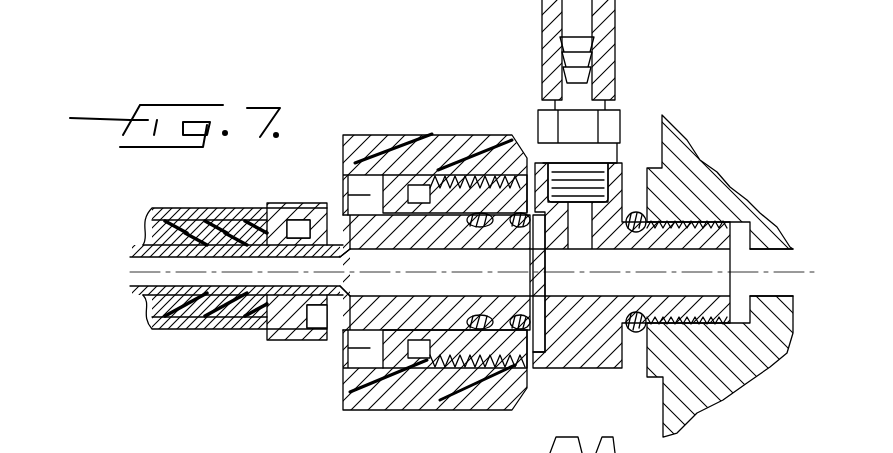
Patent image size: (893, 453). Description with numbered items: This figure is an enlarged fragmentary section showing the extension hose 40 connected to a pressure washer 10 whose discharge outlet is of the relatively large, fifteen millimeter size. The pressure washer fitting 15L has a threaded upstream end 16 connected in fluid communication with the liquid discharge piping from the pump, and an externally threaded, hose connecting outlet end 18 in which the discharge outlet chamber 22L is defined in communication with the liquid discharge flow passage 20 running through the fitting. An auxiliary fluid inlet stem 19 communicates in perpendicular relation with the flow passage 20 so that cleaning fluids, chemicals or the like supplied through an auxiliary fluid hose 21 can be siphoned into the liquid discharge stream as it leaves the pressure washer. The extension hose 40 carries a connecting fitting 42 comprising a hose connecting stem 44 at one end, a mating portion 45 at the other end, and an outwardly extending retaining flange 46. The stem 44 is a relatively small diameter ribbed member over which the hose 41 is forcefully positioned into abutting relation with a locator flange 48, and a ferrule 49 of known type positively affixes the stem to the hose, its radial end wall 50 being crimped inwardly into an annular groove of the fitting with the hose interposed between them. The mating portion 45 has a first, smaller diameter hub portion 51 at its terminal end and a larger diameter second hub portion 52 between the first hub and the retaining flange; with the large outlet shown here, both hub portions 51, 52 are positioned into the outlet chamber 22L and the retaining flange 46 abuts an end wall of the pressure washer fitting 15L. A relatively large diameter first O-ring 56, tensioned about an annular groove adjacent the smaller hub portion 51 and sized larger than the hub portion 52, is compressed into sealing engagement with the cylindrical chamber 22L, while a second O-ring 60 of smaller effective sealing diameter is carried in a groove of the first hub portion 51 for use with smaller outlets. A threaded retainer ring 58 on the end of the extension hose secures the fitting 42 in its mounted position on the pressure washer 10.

The pressure washer 10 is at (546, 226).
The pressure washer fitting 15L is at (732, 316).
The threaded upstream end 16 is at (770, 229).
The outlet end 18 is at (470, 135).
The auxiliary fluid inlet stem 19 is at (654, 198).
The liquid discharge flow passage 20 is at (446, 226).
The auxiliary fluid hose 21 is at (446, 226).
The discharge outlet chamber 22L is at (586, 315).
The extension hose 40 is at (334, 226).
The hose 41 is at (154, 279).
The connecting fitting 42 is at (296, 317).
The hose connecting stem 44 is at (334, 226).
The mating portion 45 is at (446, 226).
The retaining flange 46 is at (446, 226).
The locator flange 48 is at (248, 336).
The ferrule 49 is at (187, 240).
The radial end wall 50 is at (270, 205).
The first hub portion 51 is at (505, 384).
The second hub portion 52 is at (449, 384).
The first O-ring 56 is at (463, 229).
The threaded retainer ring 58 is at (446, 226).
The second O-ring 60 is at (517, 157).